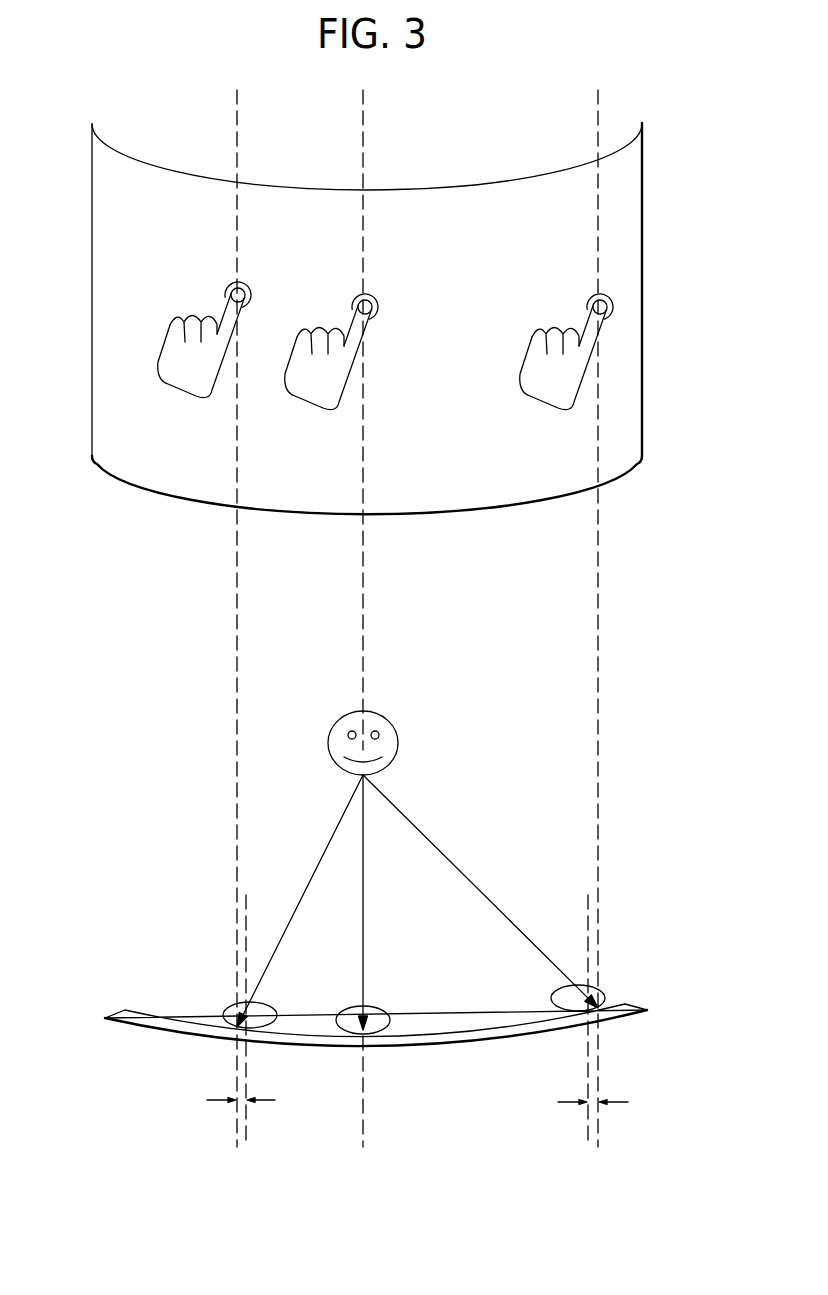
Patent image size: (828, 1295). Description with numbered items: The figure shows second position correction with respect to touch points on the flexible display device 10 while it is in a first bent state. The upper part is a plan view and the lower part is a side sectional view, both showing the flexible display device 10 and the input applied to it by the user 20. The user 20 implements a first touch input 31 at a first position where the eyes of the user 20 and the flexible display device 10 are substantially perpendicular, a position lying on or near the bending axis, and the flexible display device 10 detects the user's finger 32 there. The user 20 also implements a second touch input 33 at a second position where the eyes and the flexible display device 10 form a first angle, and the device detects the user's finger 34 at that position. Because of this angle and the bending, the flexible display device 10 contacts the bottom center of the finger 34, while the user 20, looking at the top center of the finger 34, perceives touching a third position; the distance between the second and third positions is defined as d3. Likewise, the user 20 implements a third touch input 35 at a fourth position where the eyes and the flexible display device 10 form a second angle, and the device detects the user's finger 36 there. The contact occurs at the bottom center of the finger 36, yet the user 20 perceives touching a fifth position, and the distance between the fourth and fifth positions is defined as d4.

The flexible display device 10 is at (624, 468).
The user 20 is at (388, 718).
The first touch input 31 is at (304, 392).
The user's finger 32 is at (382, 1022).
The second touch input 33 is at (177, 378).
The user's finger 34 is at (268, 1018).
The third touch input 35 is at (538, 390).
The user's finger 36 is at (555, 1008).
The distance between the second position and the third position d3 is at (238, 1119).
The distance between the fourth position and the fifth position d4 is at (598, 1120).